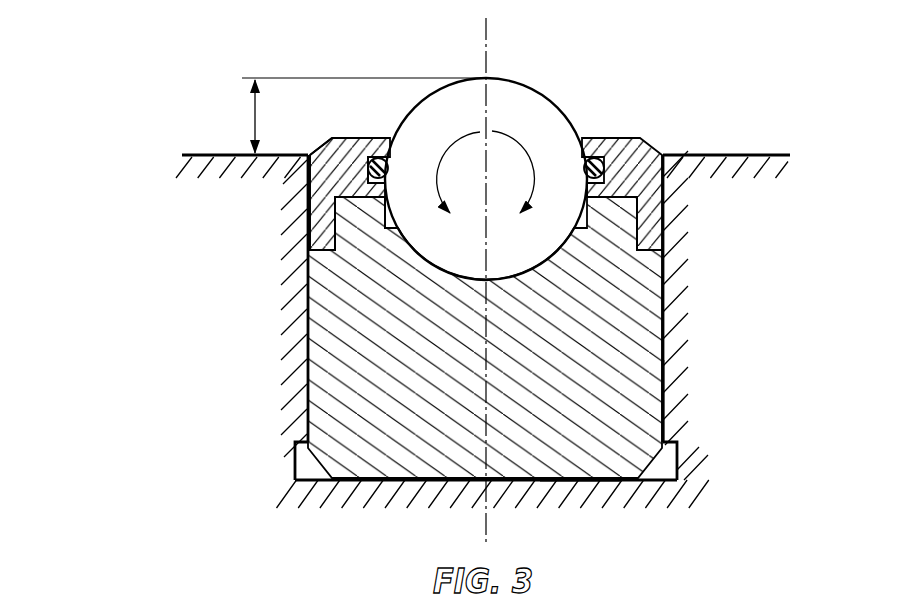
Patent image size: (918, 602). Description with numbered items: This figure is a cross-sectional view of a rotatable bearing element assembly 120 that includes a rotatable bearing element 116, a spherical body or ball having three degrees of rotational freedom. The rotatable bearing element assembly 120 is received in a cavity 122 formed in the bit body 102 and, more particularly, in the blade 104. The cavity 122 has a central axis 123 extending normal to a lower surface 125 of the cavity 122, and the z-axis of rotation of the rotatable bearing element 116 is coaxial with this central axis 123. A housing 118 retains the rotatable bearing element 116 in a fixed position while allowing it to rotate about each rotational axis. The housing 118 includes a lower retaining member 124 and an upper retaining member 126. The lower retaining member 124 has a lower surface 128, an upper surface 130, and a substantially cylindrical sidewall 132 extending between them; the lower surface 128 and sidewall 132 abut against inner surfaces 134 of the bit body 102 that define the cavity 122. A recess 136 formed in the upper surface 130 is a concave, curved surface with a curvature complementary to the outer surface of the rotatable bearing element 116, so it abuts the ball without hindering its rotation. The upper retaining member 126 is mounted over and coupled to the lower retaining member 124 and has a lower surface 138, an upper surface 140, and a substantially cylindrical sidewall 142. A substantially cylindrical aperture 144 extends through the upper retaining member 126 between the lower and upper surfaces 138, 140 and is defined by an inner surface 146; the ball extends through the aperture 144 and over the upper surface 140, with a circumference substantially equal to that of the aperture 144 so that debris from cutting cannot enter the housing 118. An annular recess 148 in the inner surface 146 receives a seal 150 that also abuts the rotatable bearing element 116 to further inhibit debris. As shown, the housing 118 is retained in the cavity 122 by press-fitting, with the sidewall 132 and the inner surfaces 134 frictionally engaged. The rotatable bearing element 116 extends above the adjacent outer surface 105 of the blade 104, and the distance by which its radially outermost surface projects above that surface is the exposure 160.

The bit body 102 is at (791, 343).
The blade 104 is at (778, 155).
The outer surface of the blade 105 is at (208, 154).
The rotatable bearing element 116 is at (551, 98).
The housing 118 is at (305, 325).
The rotatable bearing element assembly 120 is at (304, 273).
The cavity 122 is at (676, 461).
The central axis 123 is at (486, 40).
The lower retaining member 124 is at (355, 345).
The lower surface of the cavity 125 is at (355, 482).
The upper retaining member 126 is at (622, 197).
The lower surface of the lower retaining member 128 is at (578, 480).
The upper surface of the lower retaining member 130 is at (640, 246).
The sidewall of the lower retaining member 132 is at (658, 383).
The inner surfaces of the bit body 134 is at (298, 460).
The recess 136 is at (384, 218).
The lower surface of the upper retaining member 138 is at (334, 232).
The upper surface of the upper retaining member 140 is at (291, 165).
The sidewall of the upper retaining member 142 is at (311, 190).
The aperture 144 is at (656, 282).
The inner surface of the upper retaining member 146 is at (370, 196).
The annular recess 148 is at (607, 162).
The seal 150 is at (693, 190).
The exposure 160 is at (361, 115).